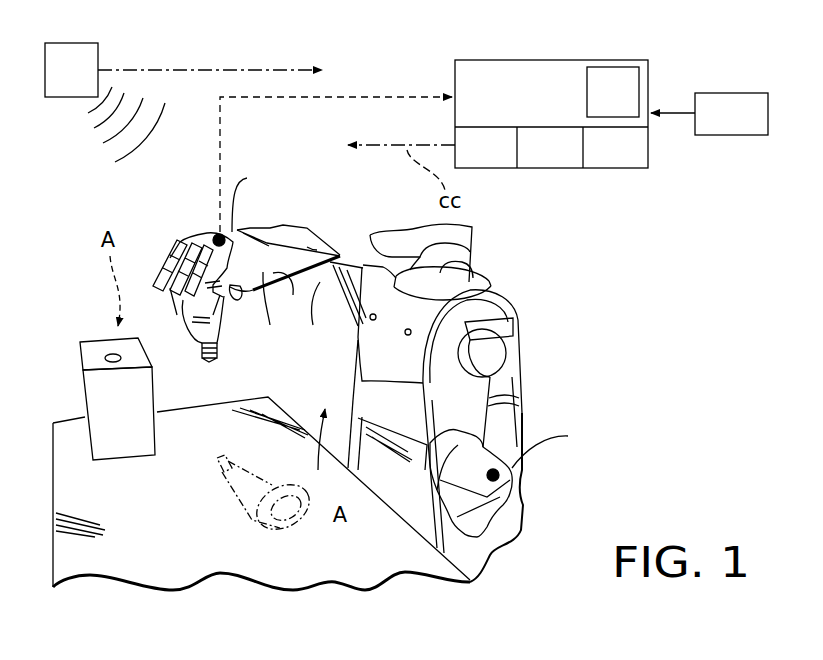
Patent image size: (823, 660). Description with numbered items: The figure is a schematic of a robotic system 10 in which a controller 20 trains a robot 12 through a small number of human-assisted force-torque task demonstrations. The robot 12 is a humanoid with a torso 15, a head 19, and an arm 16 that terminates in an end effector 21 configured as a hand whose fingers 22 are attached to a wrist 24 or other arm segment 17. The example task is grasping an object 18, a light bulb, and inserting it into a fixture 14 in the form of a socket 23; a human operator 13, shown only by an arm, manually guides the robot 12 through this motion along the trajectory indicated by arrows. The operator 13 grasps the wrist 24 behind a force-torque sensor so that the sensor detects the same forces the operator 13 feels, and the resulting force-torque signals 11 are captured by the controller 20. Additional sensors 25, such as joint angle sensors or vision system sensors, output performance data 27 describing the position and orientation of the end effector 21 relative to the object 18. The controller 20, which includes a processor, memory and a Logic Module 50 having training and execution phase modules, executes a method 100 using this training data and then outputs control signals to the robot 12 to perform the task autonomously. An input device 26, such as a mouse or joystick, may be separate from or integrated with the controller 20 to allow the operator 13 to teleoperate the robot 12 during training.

The robotic system 10 is at (663, 260).
The force-torque signals 11 is at (345, 96).
The robot 12 is at (362, 372).
The human operator 13 is at (332, 232).
The fixture 14 is at (117, 399).
The torso 15 is at (388, 332).
The arm 16 is at (293, 275).
The arm segment 17 is at (318, 290).
The object 18 is at (170, 305).
The head 19 is at (472, 272).
The controller 20 is at (648, 82).
The end effector 21 is at (197, 240).
The fingers 22 is at (172, 262).
The socket 23 is at (110, 354).
The wrist 24 is at (262, 230).
The additional sensors 25 is at (105, 102).
The input device 26 is at (709, 114).
The performance data 27 is at (202, 70).
The Logic Module 50 is at (613, 92).
The method 100 is at (486, 150).